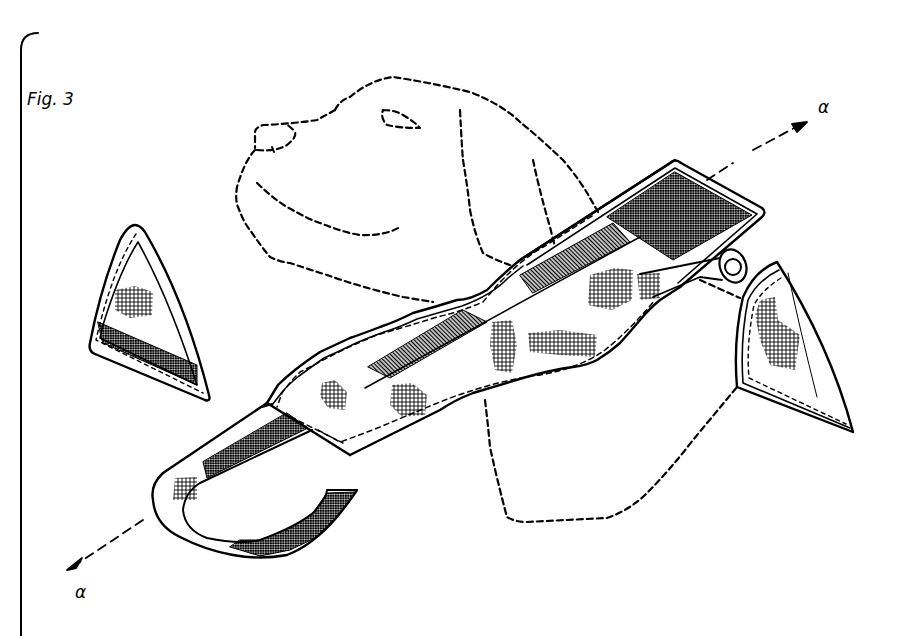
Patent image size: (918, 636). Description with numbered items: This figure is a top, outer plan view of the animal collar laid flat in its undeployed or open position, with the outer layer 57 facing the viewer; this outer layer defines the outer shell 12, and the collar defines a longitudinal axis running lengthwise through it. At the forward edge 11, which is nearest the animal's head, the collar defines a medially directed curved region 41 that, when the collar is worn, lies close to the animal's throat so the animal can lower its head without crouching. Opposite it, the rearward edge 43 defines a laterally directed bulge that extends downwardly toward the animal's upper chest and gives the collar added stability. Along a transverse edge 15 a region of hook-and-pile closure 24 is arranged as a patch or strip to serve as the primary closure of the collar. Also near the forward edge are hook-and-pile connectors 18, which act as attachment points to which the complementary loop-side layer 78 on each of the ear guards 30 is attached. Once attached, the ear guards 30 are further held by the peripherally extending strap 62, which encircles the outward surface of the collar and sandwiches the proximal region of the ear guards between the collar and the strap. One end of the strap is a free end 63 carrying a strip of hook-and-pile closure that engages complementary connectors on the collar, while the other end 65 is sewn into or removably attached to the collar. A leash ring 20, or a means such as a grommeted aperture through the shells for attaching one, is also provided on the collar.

The forward edge 11 is at (608, 207).
The outer shell 12 is at (373, 408).
The transverse edge 15 is at (763, 208).
The hook-and-pile connectors 18 is at (557, 255).
The leash ring 20 is at (745, 265).
The region of hook-and-pile closure 24 is at (740, 200).
The ear guards 30 is at (148, 290).
The curved region 41 is at (488, 285).
The rearward edge 43 is at (618, 346).
The outer layer 57 is at (470, 357).
The strap 62 is at (177, 513).
The free end 63 is at (310, 543).
The strap end 65 is at (260, 405).
The loop-side layer 78 is at (113, 352).